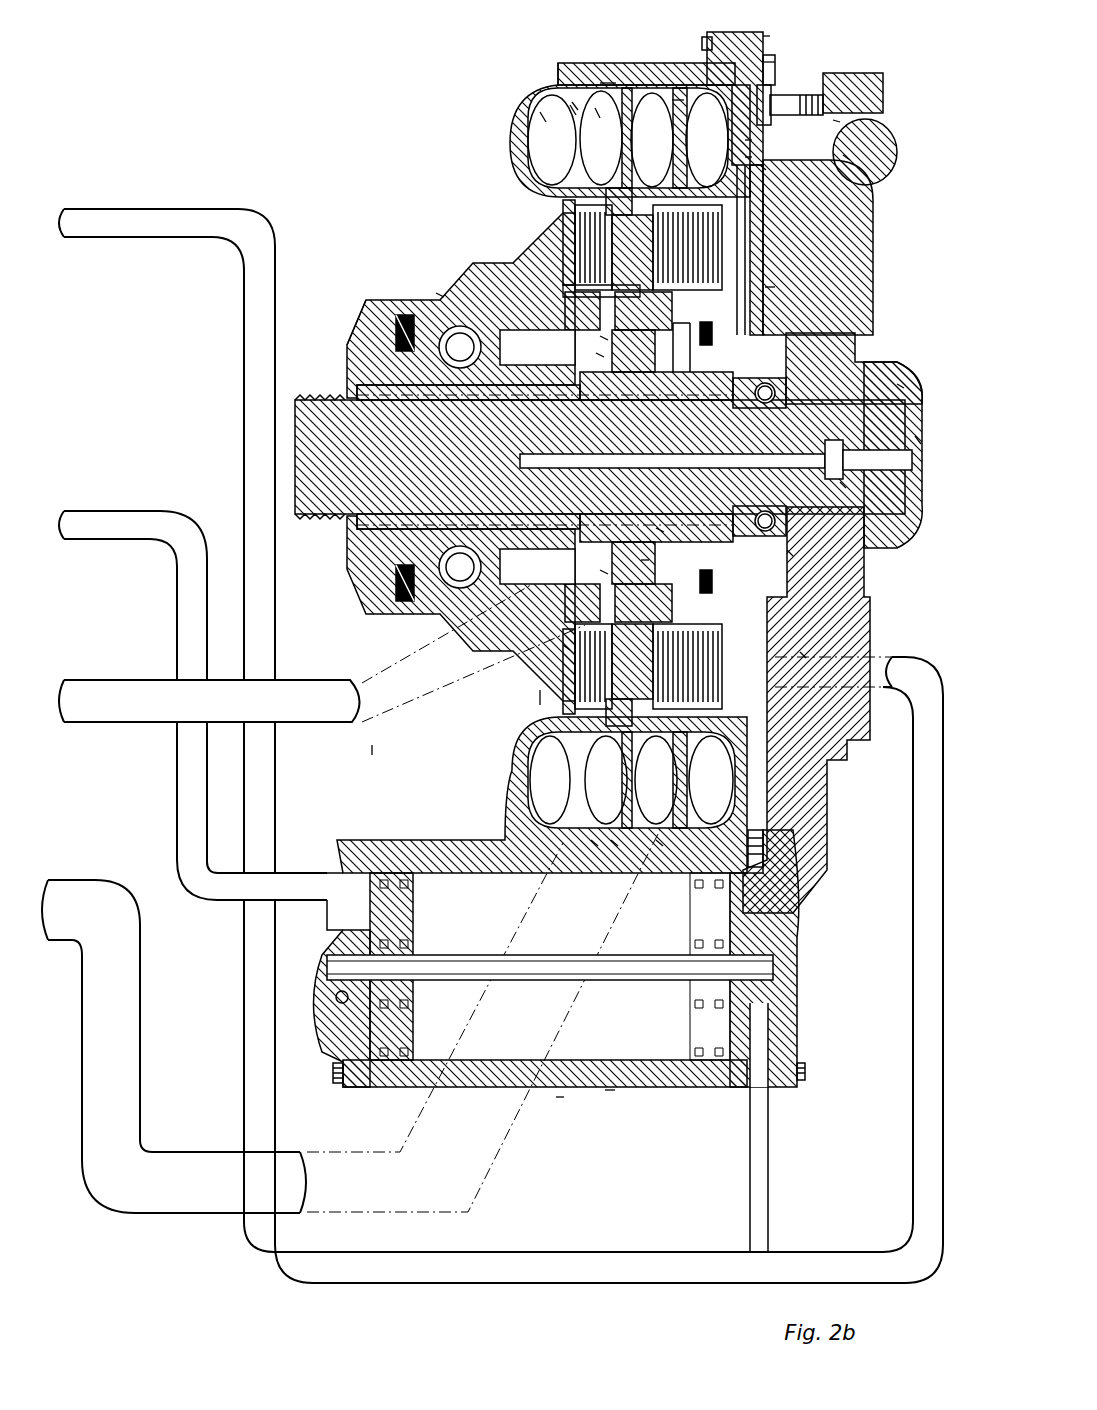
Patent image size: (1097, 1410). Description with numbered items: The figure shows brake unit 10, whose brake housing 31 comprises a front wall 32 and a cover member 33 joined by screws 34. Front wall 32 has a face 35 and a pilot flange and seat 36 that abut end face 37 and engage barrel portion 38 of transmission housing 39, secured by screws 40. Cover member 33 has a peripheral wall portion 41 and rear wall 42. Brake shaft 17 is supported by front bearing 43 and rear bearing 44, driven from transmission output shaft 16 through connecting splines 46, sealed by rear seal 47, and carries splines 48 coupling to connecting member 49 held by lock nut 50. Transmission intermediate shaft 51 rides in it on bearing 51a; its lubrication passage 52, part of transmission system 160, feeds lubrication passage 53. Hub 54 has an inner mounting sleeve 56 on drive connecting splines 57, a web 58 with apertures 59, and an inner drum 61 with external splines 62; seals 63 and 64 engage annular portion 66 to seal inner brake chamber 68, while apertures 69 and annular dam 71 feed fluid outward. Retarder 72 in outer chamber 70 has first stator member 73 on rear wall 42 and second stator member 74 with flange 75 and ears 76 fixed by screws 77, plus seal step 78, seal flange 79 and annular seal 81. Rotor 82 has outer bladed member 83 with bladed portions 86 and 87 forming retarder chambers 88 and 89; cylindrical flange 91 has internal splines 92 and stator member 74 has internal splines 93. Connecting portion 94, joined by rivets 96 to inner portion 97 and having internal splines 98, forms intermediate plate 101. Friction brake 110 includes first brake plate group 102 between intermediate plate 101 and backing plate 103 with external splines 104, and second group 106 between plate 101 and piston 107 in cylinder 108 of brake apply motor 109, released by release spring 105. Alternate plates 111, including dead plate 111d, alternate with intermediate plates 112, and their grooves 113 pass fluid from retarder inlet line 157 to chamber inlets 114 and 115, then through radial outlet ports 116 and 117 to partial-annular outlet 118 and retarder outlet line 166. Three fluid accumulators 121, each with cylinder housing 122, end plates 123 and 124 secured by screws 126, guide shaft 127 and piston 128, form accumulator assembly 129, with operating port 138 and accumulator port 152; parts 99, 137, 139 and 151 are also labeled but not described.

The brake unit 10 is at (365, 755).
The transmission output shaft 16 is at (868, 376).
The brake shaft 17 is at (900, 386).
The brake housing 31 is at (754, 32).
The front wall 32 is at (765, 40).
The cover member 33 is at (547, 72).
The screws 34 is at (710, 40).
The face 35 is at (835, 122).
The pilot flange and seat 36 is at (832, 165).
The end face 37 is at (835, 142).
The barrel portion 38 is at (845, 158).
The transmission housing 39 is at (880, 73).
The screws 40 is at (812, 105).
The cylindrical wall portion 41 is at (608, 83).
The rear wall 42 is at (520, 137).
The front bearing 43 is at (760, 340).
The rear bearing 44 is at (440, 295).
The connecting splines 46 is at (786, 388).
The rear seal 47 is at (400, 318).
The splines 48 is at (405, 385).
The connecting member 49 is at (352, 322).
The lock nut 50 is at (318, 385).
The transmission intermediate shaft 51 is at (918, 408).
The bearing 51a is at (843, 484).
The lubrication passage 52 is at (912, 468).
The lubrication passage 53 is at (632, 455).
The hub 54 is at (604, 338).
The inner mounting sleeve 56 is at (705, 562).
The drive connecting splines 57 is at (733, 535).
The web 58 is at (660, 530).
The apertures 59 is at (645, 560).
The inner drum 61 is at (610, 623).
The external splines 62 is at (600, 355).
The seal 63 is at (712, 365).
The seal 64 is at (609, 385).
The annular portion 66 is at (700, 398).
The inner brake chamber 68 is at (599, 331).
The apertures 69 is at (700, 574).
The outer chamber 70 is at (632, 85).
The annular dam 71 is at (535, 290).
The retarder 72 is at (483, 84).
The first annular bladed stator member 73 is at (543, 117).
The second annular bladed stator member 74 is at (775, 85).
The flange 75 is at (775, 68).
The ears 76 is at (790, 860).
The screws 77 is at (762, 855).
The seal step 78 is at (747, 143).
The seal flange 79 is at (763, 167).
The annular seal 81 is at (747, 157).
The rotor 82 is at (597, 113).
The outer bladed member 83 is at (643, 128).
The first bladed portion 86 is at (573, 110).
The second bladed portion 87 is at (650, 115).
The first retarder chamber 88 is at (575, 105).
The second retarder chamber 89 is at (678, 100).
The cylindrical flange 91 is at (575, 193).
The internal splines 92 is at (578, 192).
The internal splines 93 is at (718, 198).
The connecting portion 94 is at (630, 255).
The rivets 96 is at (620, 722).
The inner portion 97 is at (640, 318).
The internal splines 98 is at (583, 310).
The pressure plate 99 is at (645, 565).
The intermediate plate 101 is at (636, 212).
The first group of brake plates 102 is at (587, 227).
The backing plate 103 is at (570, 242).
The external splines 104 is at (573, 210).
The release spring 105 is at (790, 553).
The second group of brake plates 106 is at (750, 217).
The piston 107 is at (730, 237).
The cylinder 108 is at (775, 255).
The friction brake apply motor 109 is at (770, 287).
The friction brake 110 is at (533, 701).
The alternate plates 111 is at (557, 650).
The dead plate 111d is at (567, 647).
The intermediate plates 112 is at (557, 703).
The grooves 113 is at (703, 733).
The first chamber inlet 114 is at (600, 730).
The second chamber inlet 115 is at (657, 722).
The radial outlet port 116 is at (595, 843).
The radial outlet port 117 is at (660, 843).
The partial-annular outlet 118 is at (615, 843).
The fluid accumulator 121 is at (614, 1097).
The cylinder housing 122 is at (660, 1078).
The end plate 123 is at (790, 940).
The end plate 124 is at (358, 1040).
The screws 126 is at (333, 1070).
The guide shaft 127 is at (445, 958).
The piston 128 is at (395, 1033).
The accumulator assembly 129 is at (563, 1105).
The conduit 137 is at (100, 215).
The operating port 138 is at (762, 1085).
The passage 139 is at (803, 655).
The conduit 151 is at (93, 522).
The accumulator port 152 is at (327, 885).
The retarder inlet line 157 is at (88, 690).
The transmission system 160 is at (926, 444).
The retarder outlet line 166 is at (73, 905).